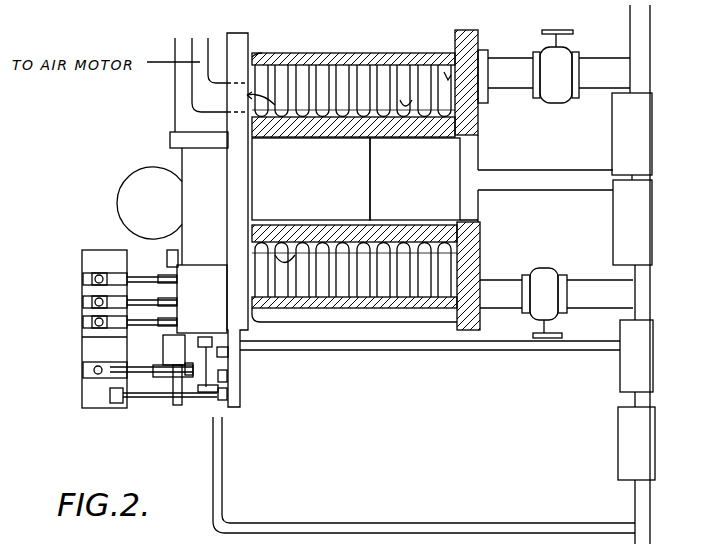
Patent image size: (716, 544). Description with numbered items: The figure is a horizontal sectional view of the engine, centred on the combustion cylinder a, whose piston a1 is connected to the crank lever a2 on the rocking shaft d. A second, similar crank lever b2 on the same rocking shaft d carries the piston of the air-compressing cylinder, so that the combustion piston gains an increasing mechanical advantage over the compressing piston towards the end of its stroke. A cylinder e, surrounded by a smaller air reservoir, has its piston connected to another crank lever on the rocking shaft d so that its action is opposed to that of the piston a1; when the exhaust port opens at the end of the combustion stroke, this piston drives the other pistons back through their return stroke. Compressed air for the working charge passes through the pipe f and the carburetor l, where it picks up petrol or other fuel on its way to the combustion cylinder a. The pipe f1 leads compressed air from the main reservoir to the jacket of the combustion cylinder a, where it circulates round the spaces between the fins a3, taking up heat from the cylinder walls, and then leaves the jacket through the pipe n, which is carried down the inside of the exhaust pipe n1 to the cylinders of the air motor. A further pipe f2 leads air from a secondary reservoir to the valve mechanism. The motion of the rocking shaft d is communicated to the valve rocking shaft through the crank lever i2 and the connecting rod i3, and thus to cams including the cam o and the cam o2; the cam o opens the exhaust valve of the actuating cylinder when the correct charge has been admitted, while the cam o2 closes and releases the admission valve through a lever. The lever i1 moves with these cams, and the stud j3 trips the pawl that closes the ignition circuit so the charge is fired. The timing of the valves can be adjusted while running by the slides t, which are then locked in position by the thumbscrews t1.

The combustion cylinder a is at (366, 180).
The piston of the combustion cylinder a1 is at (424, 178).
The crank lever a2 is at (573, 217).
The fins a3 is at (400, 108).
The crank lever b2 is at (640, 134).
The rocking shaft d is at (642, 274).
The cylinder e is at (637, 443).
The pipe f is at (592, 290).
The pipe f1 is at (597, 70).
The pipe f2 is at (483, 521).
The lever i1 is at (175, 347).
The crank lever i2 is at (643, 356).
The connecting rod i3 is at (430, 362).
The stud j3 is at (208, 385).
The carburetor l is at (149, 203).
The pipe n is at (233, 75).
The exhaust pipe n1 is at (182, 151).
The cam o is at (160, 274).
The cam o2 is at (160, 326).
The slides t is at (95, 322).
The thumbscrews t1 is at (95, 279).